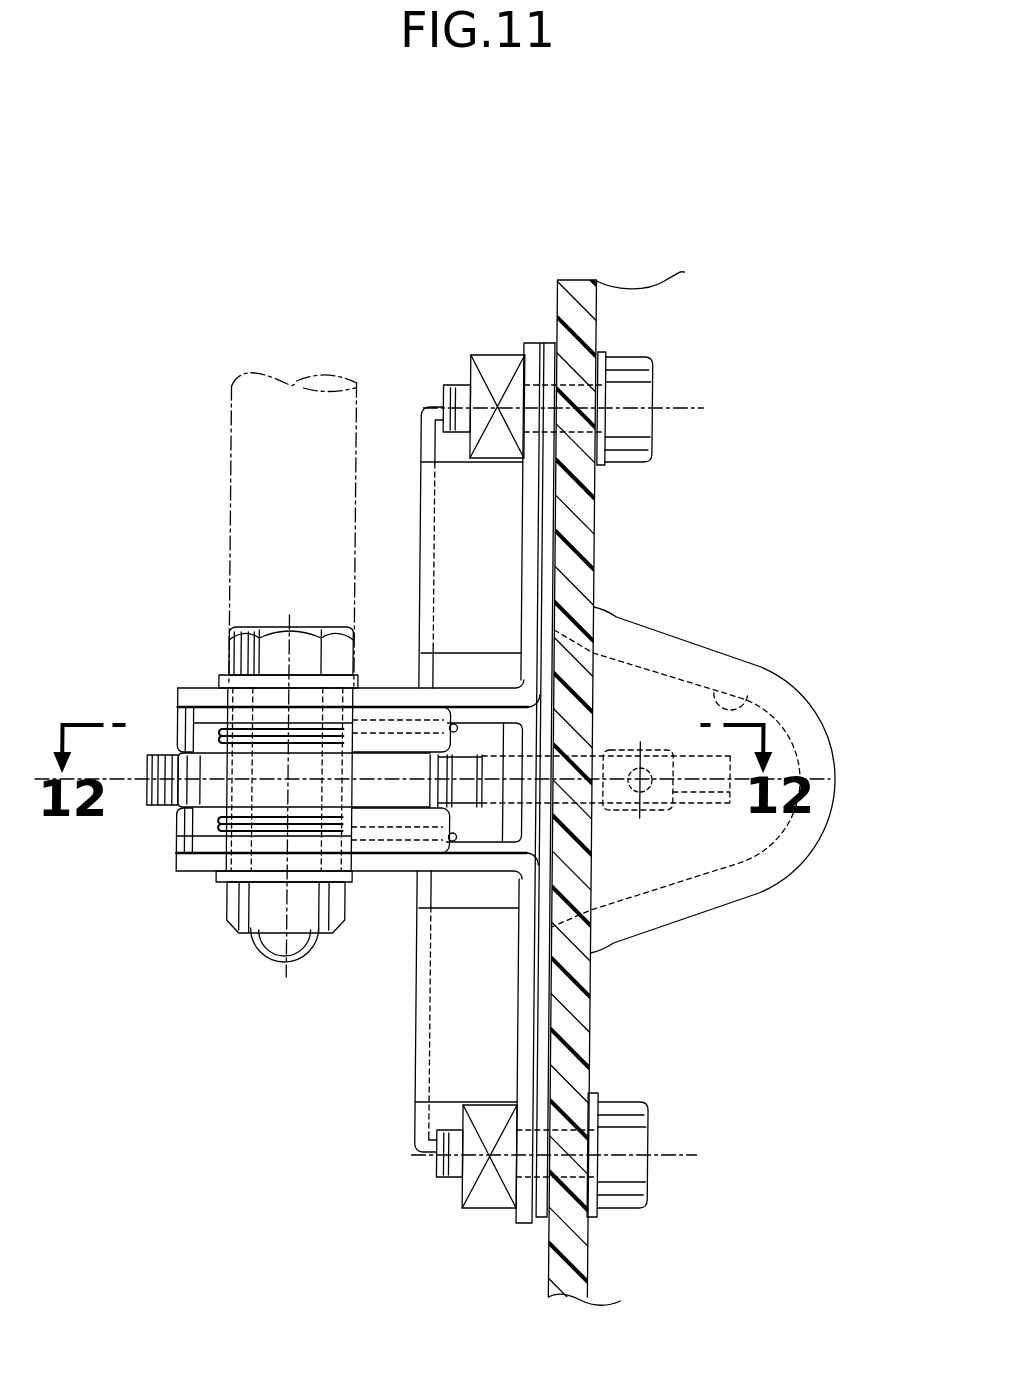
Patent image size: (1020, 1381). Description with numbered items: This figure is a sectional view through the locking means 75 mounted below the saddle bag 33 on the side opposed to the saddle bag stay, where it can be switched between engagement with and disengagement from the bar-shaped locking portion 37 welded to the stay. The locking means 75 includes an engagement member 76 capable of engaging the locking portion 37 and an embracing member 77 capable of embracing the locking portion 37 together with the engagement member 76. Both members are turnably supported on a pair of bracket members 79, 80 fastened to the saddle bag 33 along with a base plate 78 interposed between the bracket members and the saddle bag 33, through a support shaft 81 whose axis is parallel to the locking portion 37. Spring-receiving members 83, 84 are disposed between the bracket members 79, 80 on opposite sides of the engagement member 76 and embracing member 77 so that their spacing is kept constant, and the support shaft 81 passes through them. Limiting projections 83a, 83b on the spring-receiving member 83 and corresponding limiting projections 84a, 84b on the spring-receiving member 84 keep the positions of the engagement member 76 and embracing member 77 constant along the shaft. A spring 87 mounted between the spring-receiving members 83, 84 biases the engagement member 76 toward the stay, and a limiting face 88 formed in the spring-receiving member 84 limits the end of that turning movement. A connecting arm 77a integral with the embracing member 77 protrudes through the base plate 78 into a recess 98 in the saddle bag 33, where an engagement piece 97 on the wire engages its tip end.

The saddle bag 33 is at (583, 1029).
The bar-shaped locking portion 37 is at (228, 480).
The locking means 75 is at (208, 887).
The engagement member 76 is at (303, 772).
The embracing member 77 is at (482, 760).
The connecting arm 77a is at (703, 805).
The base plate 78 is at (540, 538).
The bracket member 79 is at (193, 692).
The bracket member 80 is at (188, 872).
The support shaft 81 is at (268, 640).
The spring-receiving member 83 is at (185, 714).
The limiting projection 83a is at (382, 742).
The limiting projection 83b is at (180, 733).
The spring-receiving member 84 is at (186, 847).
The limiting projection 84a is at (392, 846).
The limiting projection 84b is at (182, 820).
The spring 87 is at (300, 862).
The limiting face 88 is at (512, 790).
The engagement piece 97 is at (653, 730).
The recess 98 is at (745, 700).